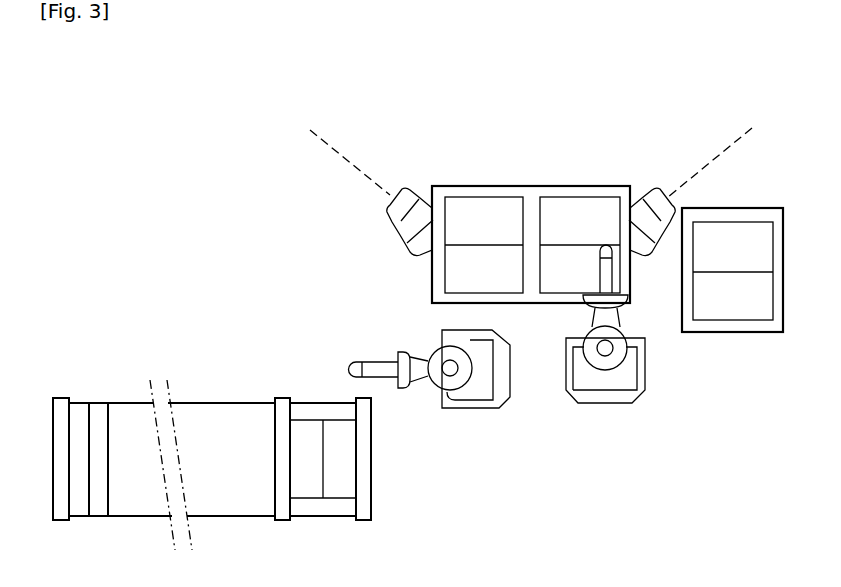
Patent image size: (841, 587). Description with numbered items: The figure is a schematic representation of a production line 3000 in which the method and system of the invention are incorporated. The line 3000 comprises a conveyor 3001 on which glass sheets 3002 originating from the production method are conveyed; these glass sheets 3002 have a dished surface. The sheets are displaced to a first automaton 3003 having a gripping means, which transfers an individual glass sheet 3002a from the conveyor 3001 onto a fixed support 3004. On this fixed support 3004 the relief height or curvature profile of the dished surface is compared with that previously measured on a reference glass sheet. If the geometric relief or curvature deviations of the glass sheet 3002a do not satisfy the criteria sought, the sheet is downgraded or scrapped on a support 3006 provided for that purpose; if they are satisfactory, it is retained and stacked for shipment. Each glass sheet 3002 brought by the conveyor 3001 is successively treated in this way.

The line 3000 is at (243, 146).
The conveyor 3001 is at (240, 402).
The glass sheets 3002 is at (348, 475).
The glass sheet 3002a is at (557, 253).
The first automaton 3003 is at (490, 408).
The fixed support 3004 is at (502, 186).
The support 3006 is at (745, 208).